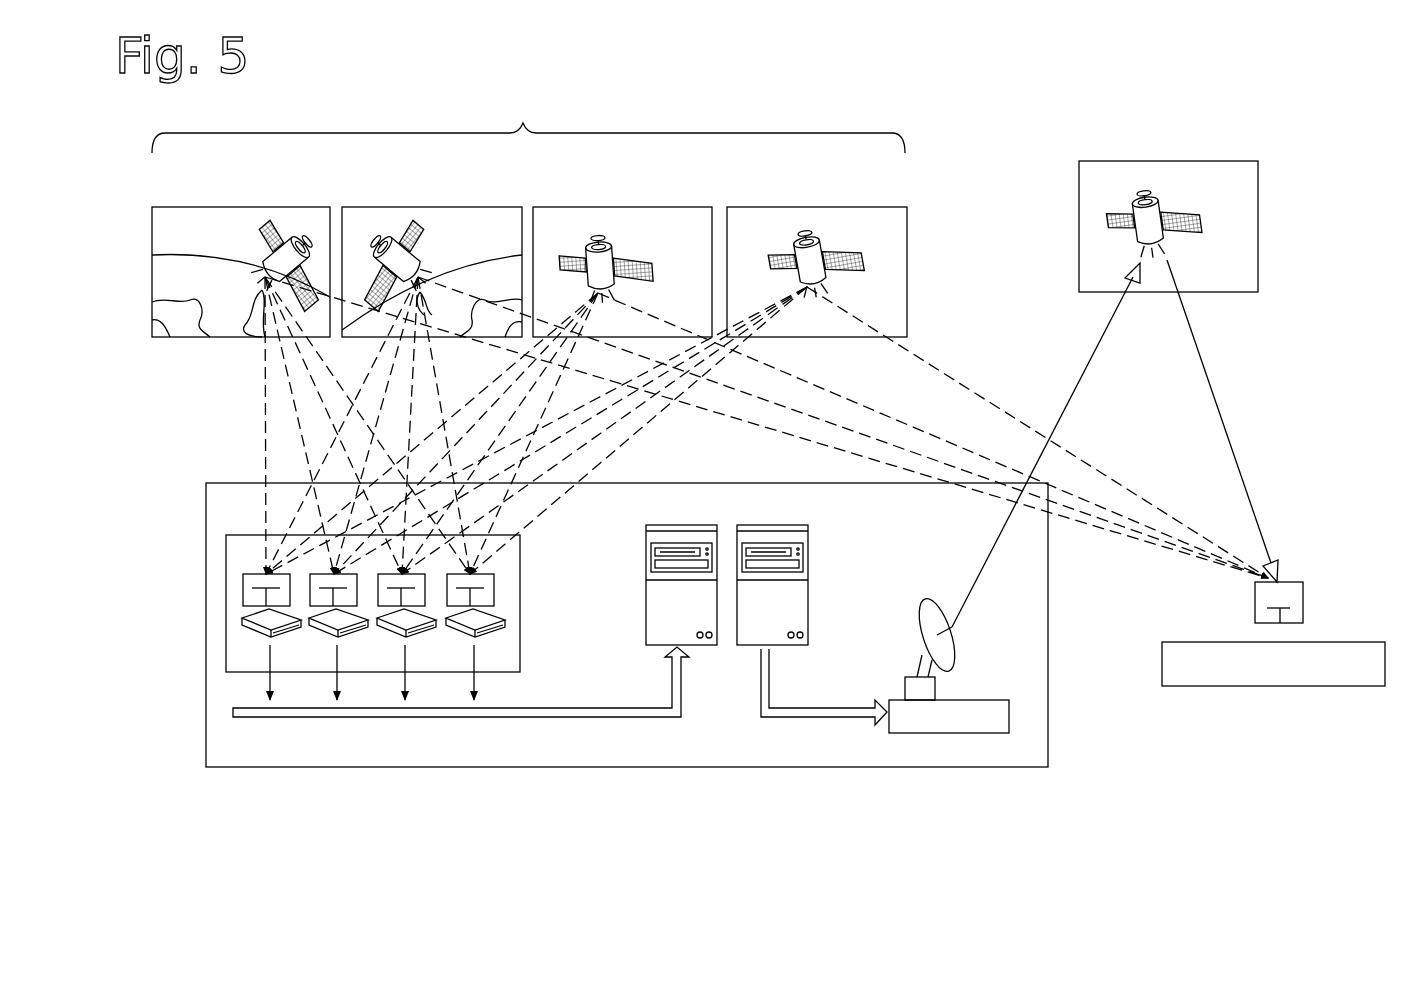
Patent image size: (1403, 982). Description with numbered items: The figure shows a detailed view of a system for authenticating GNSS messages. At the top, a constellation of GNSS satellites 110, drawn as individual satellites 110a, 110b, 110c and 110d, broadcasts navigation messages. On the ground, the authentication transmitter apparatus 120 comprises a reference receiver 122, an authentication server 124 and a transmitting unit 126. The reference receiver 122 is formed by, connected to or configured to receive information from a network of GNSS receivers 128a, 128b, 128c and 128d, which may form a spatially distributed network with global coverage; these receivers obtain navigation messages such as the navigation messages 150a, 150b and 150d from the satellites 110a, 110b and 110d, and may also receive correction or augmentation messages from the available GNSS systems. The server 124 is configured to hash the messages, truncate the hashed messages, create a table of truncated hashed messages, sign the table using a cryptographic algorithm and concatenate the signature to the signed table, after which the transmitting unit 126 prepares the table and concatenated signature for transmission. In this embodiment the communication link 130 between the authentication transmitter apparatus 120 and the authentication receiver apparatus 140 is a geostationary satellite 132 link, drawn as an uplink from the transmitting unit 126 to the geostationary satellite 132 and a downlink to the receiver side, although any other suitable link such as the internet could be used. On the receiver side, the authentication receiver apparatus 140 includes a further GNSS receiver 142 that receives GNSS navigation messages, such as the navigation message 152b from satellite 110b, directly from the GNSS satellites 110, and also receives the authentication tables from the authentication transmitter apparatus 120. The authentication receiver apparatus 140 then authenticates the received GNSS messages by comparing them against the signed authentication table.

The GNSS satellites 110 is at (529, 213).
The GNSS satellite 110a is at (237, 212).
The GNSS satellite 110b is at (428, 212).
The GNSS satellite 110c is at (618, 214).
The GNSS satellite 110d is at (815, 216).
The authentication transmitter apparatus 120 is at (338, 775).
The reference receiver 122 is at (226, 645).
The authentication server 124 is at (748, 525).
The transmitting unit 126 is at (935, 712).
The GNSS receiver 128a is at (257, 588).
The GNSS receiver 128b is at (323, 588).
The GNSS receiver 128c is at (407, 588).
The GNSS receiver 128d is at (480, 588).
The communication link 130 is at (1070, 405).
The geostationary satellite 132 is at (1197, 170).
The authentication receiver apparatus 140 is at (1277, 695).
The further GNSS receiver 142 is at (1290, 605).
The navigation message 150a is at (290, 382).
The navigation message 150b is at (380, 404).
The navigation message 150d is at (610, 427).
The navigation message 152b is at (867, 432).